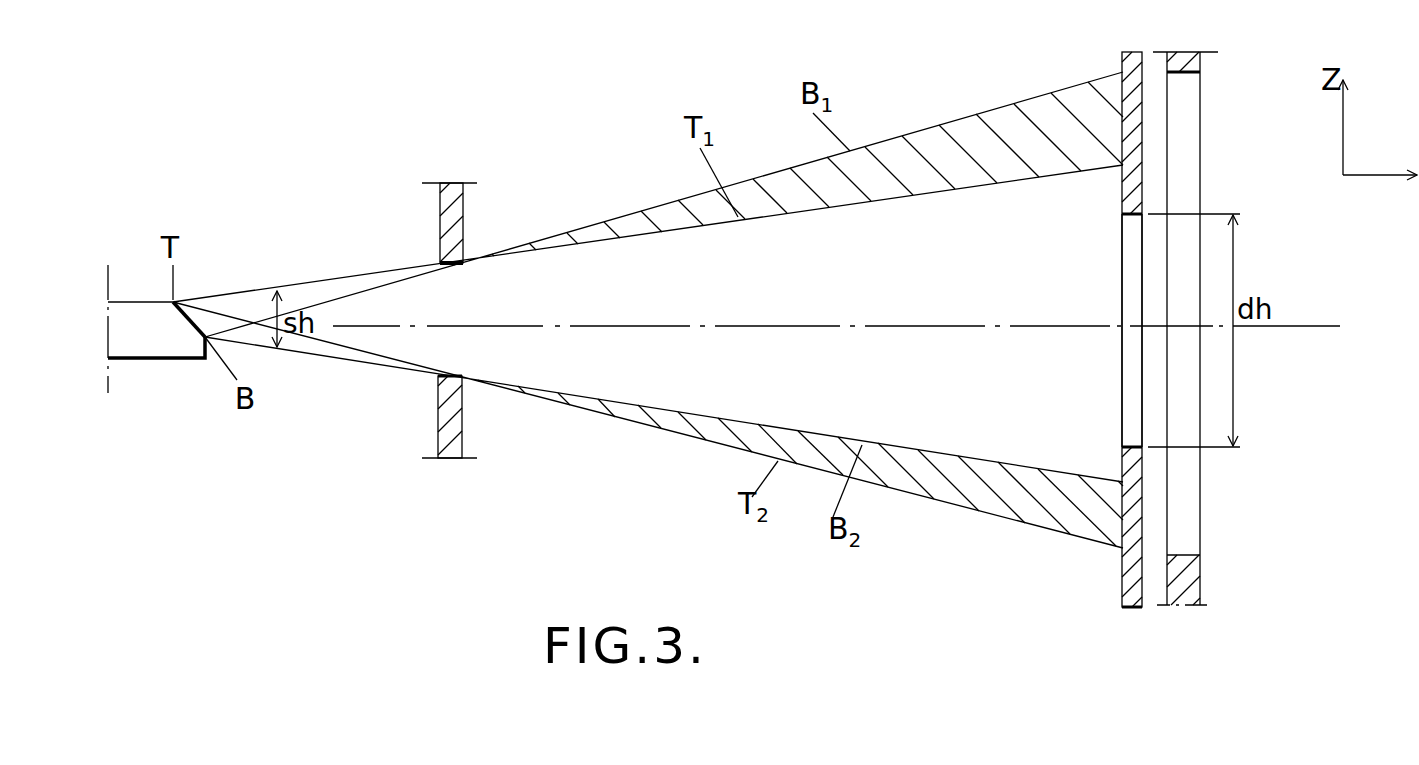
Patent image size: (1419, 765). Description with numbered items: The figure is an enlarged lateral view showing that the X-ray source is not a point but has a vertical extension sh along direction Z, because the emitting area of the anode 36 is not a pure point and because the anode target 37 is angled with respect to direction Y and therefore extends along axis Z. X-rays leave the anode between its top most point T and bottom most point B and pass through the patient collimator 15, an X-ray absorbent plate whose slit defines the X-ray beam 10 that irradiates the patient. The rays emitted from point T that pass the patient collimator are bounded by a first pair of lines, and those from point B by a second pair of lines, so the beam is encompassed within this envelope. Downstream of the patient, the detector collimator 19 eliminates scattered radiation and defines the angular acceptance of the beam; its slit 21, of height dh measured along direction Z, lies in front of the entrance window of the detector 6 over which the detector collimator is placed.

The anode 36 is at (143, 333).
The anode target 37 is at (192, 320).
The patient collimator 15 is at (458, 182).
The X-ray beam 10 is at (730, 370).
The slit 21 is at (1130, 408).
The detector collimator 19 is at (1122, 593).
The detector 6 is at (1197, 583).